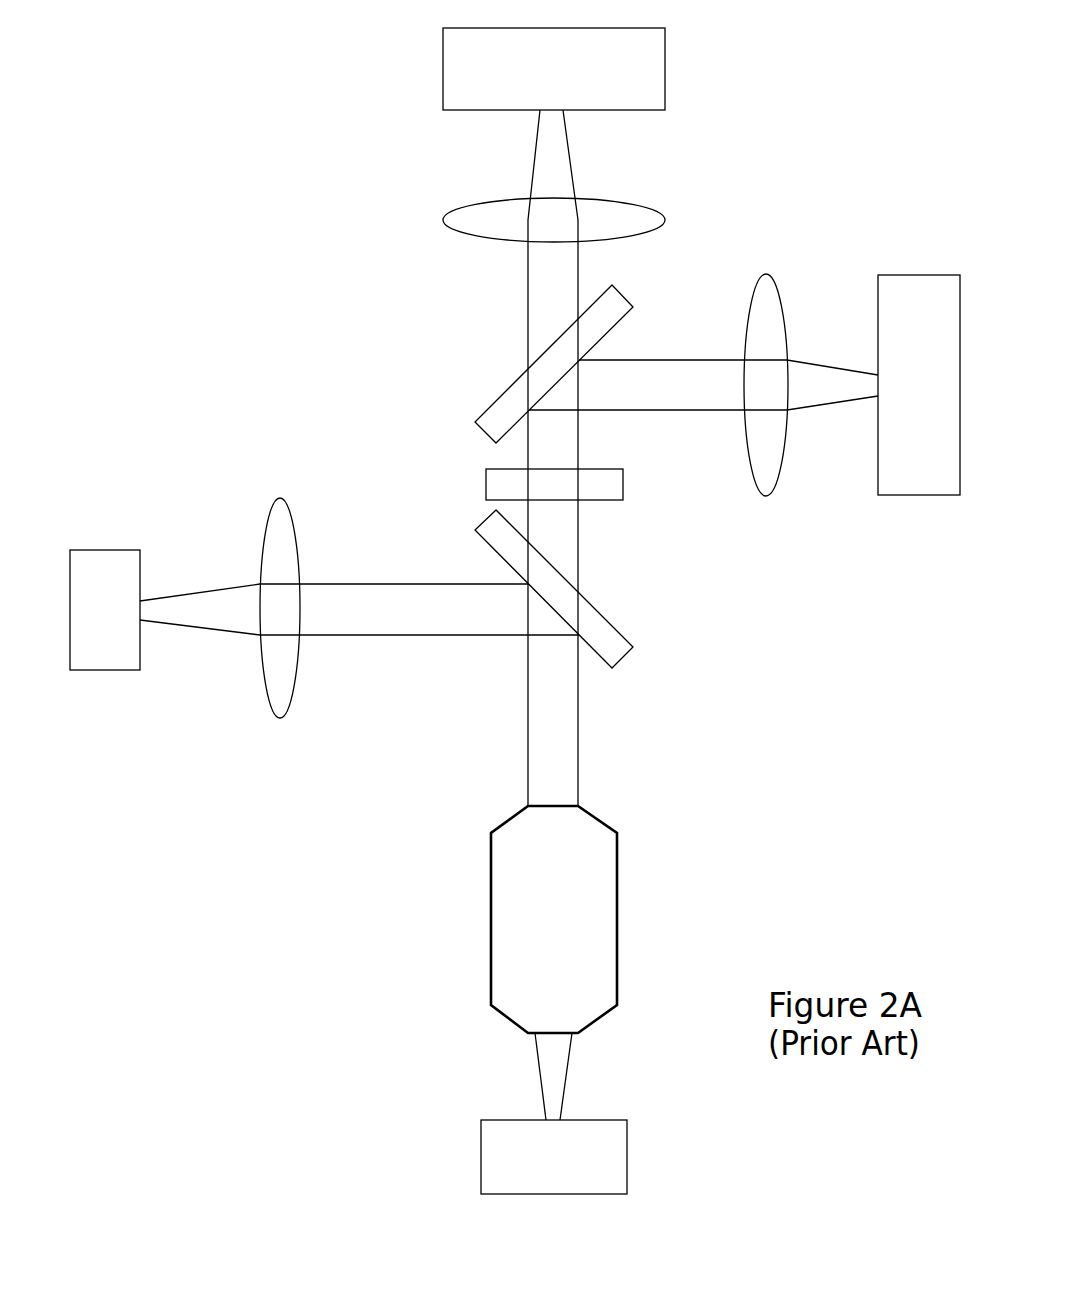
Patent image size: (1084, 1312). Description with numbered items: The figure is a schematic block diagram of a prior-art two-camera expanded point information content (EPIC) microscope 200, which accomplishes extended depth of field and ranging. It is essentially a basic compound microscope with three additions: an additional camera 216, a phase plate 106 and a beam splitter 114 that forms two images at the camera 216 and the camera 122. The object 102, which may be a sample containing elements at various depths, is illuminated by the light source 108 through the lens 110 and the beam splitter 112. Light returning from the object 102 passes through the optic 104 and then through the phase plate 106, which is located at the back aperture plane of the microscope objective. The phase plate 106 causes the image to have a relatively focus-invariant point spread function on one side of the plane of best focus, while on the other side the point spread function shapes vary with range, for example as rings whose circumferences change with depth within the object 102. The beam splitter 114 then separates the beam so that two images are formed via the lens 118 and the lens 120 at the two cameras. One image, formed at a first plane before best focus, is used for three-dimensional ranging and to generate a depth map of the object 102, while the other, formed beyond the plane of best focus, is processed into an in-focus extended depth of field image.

The two-camera expanded point information content (EPIC) microscope 200 is at (355, 921).
The camera 122 is at (554, 69).
The lens 120 is at (572, 212).
The beam splitter 114 is at (537, 364).
The lens 118 is at (782, 375).
The additional camera 216 is at (919, 385).
The phase plate 106 is at (536, 478).
The lens 110 is at (285, 587).
The light source 108 is at (91, 576).
The beam splitter 112 is at (580, 589).
The optic 104 is at (554, 919).
The object 102 is at (554, 1157).